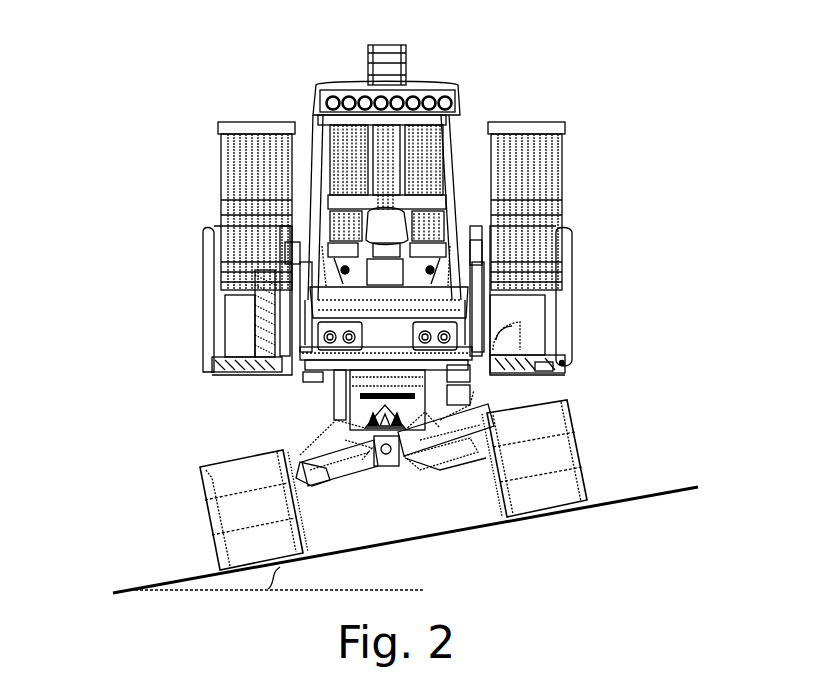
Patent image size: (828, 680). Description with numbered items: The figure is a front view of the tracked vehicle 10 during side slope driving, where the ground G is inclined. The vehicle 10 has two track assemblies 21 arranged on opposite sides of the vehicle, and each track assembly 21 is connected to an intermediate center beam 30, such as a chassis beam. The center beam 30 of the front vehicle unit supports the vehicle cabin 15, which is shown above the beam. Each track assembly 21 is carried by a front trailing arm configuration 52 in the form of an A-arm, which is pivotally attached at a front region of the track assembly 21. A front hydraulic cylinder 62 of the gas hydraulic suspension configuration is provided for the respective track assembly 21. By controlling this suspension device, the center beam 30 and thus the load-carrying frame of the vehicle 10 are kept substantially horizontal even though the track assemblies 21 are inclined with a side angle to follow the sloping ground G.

The tracked vehicle 10 is at (540, 66).
The vehicle cabin 15 is at (342, 82).
The center beam 30 is at (366, 418).
The front hydraulic cylinder 62 is at (312, 440).
The front trailing arm configuration 52 is at (340, 477).
The track assembly 21 is at (209, 518).
The ground surface G is at (631, 500).